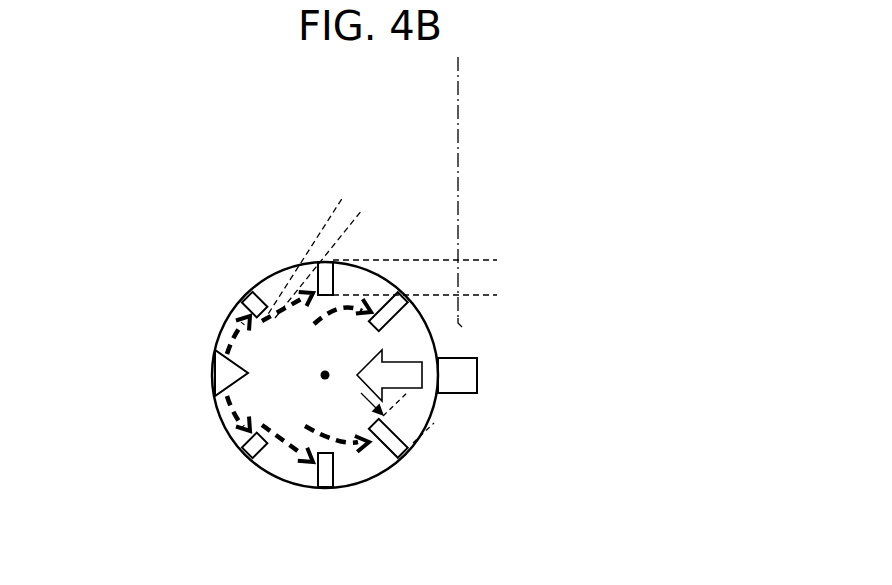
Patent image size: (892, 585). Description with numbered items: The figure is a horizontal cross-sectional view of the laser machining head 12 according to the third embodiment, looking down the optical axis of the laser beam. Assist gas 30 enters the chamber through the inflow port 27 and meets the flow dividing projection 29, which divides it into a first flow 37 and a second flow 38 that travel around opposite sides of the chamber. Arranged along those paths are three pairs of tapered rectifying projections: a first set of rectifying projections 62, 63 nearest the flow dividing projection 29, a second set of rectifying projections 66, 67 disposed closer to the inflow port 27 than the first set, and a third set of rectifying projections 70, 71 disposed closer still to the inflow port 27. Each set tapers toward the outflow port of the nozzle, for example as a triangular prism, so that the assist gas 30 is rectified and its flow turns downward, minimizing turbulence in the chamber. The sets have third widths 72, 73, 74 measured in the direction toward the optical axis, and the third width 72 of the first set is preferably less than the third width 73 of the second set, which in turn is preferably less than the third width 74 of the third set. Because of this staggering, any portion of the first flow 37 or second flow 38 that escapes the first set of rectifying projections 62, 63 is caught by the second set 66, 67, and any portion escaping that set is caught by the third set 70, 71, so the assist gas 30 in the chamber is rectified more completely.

The laser machining head 12 is at (548, 172).
The inflow port 27 is at (478, 375).
The flow dividing projection 29 is at (224, 373).
The assist gas 30 is at (412, 382).
The first flow 37 is at (230, 348).
The second flow 38 is at (224, 400).
The first set of rectifying projections 62 is at (250, 292).
The first set of rectifying projections 63 is at (247, 452).
The second set of rectifying projections 66 is at (333, 262).
The second set of rectifying projections 67 is at (324, 487).
The third set of rectifying projections 70 is at (398, 316).
The third set of rectifying projections 71 is at (393, 460).
The third width 72 is at (332, 193).
The third width 73 is at (479, 327).
The third width 74 is at (422, 452).